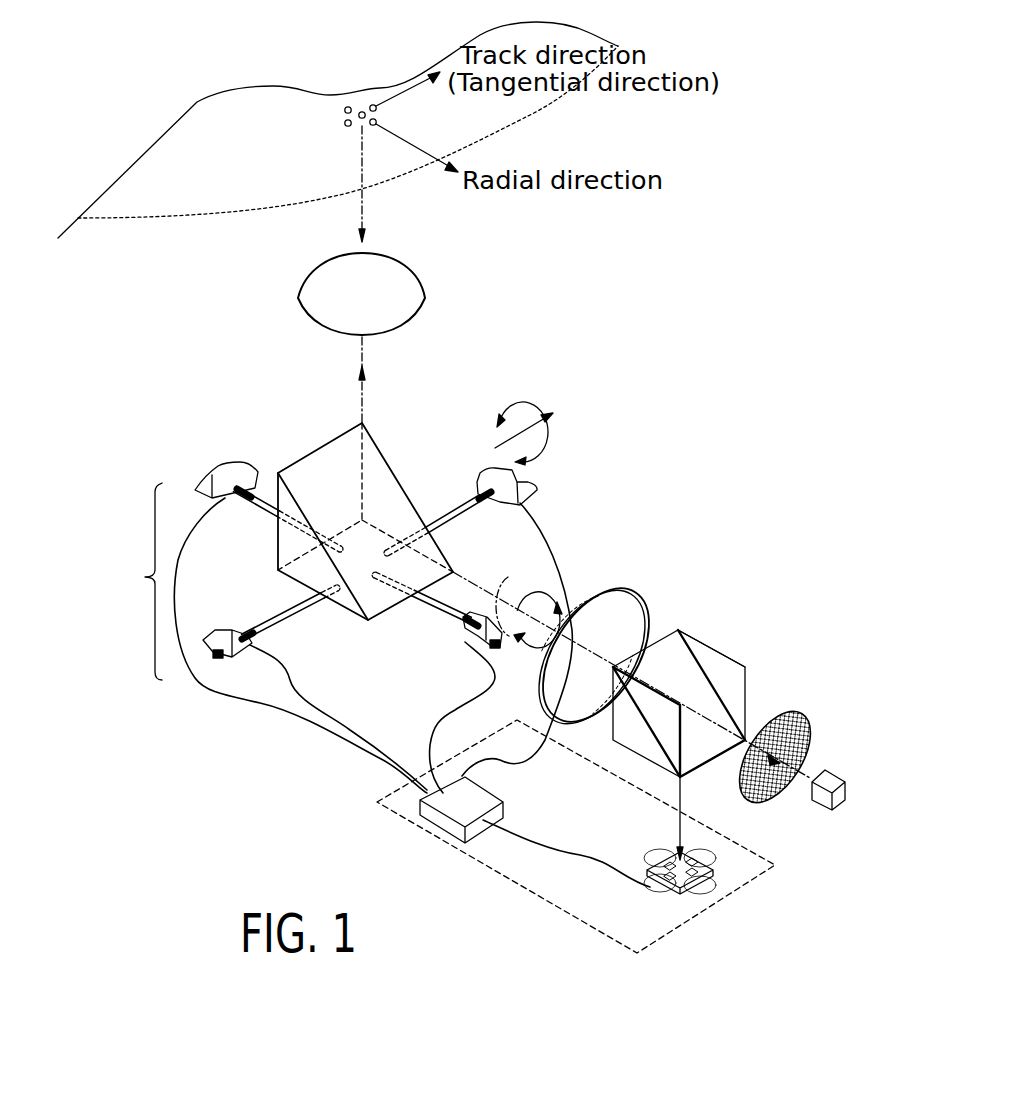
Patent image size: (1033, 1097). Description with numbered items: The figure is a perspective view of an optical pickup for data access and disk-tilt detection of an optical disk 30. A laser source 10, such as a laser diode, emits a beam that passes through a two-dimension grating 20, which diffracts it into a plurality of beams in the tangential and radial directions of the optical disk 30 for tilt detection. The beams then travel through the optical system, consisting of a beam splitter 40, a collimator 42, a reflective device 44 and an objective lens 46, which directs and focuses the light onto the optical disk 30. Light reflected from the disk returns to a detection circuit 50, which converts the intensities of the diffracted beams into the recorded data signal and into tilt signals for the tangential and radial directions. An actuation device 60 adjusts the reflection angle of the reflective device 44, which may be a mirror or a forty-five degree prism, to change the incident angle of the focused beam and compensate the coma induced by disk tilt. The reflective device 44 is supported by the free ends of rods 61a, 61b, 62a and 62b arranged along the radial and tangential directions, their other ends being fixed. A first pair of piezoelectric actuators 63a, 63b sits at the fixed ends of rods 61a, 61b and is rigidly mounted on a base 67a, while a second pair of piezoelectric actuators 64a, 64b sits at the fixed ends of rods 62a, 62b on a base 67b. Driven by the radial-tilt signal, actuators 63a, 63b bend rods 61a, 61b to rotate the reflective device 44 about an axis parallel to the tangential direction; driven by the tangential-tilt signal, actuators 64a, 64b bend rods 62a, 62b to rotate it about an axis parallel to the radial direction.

The laser source 10 is at (835, 780).
The two-dimension grating 20 is at (783, 707).
The optical disk 30 is at (218, 202).
The beam splitter 40 is at (693, 660).
The collimator 42 is at (620, 597).
The reflective device 44 is at (341, 436).
The objective lens 46 is at (432, 294).
The detection circuit 50 is at (733, 841).
The actuation device 60 is at (138, 581).
The rod 61a is at (256, 506).
The rod 61b is at (448, 623).
The rod 62a is at (282, 622).
The rod 62b is at (457, 528).
The piezoelectric actuator 63a is at (237, 484).
The piezoelectric actuator 63b is at (471, 613).
The piezoelectric actuator 64a is at (232, 630).
The piezoelectric actuator 64b is at (478, 497).
The base 67a is at (222, 462).
The base 67b is at (222, 630).